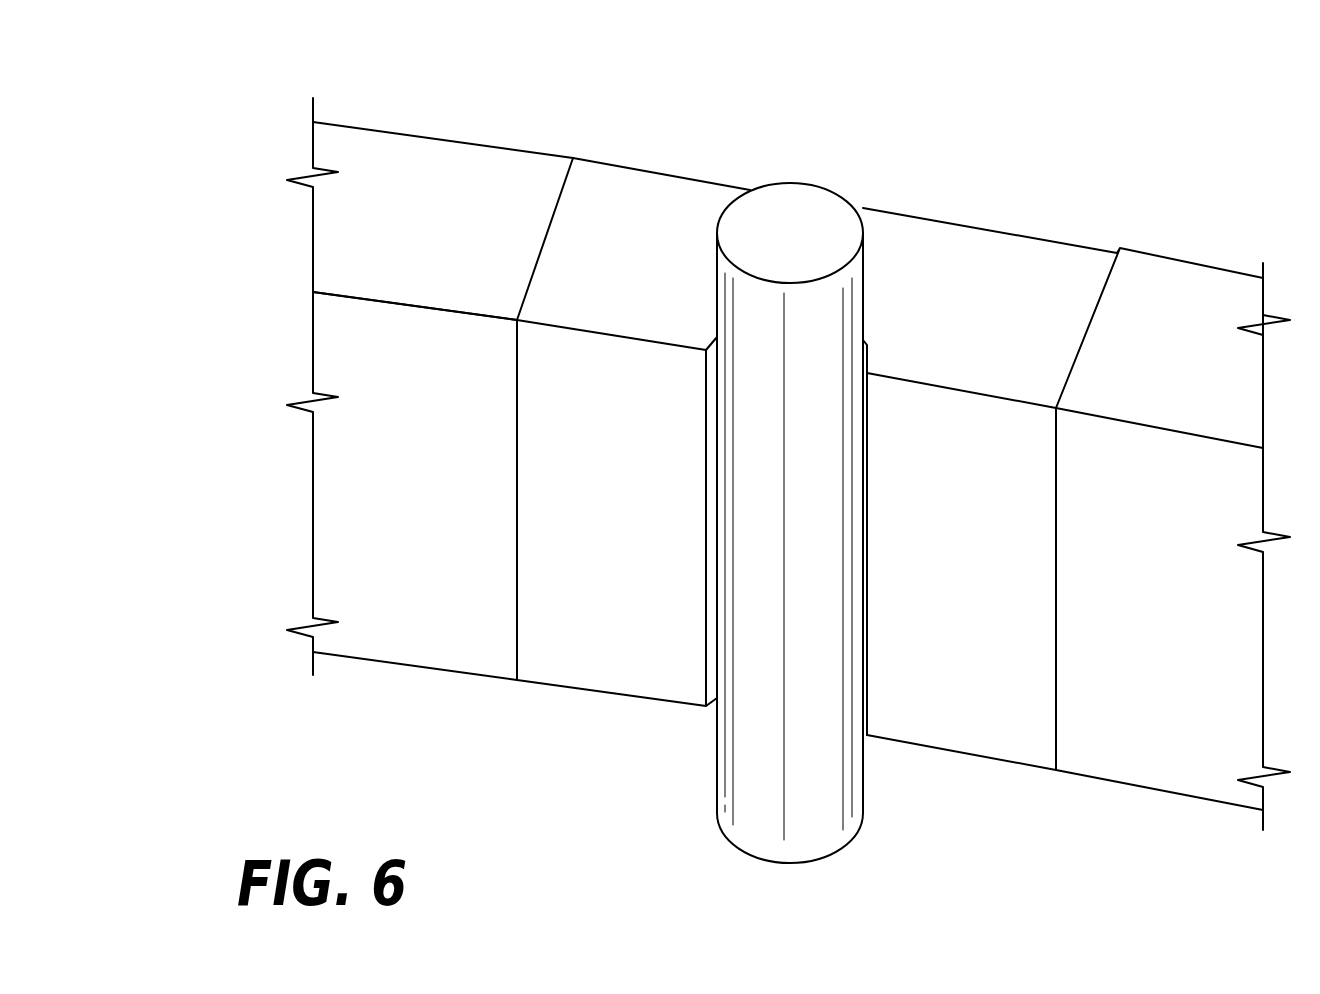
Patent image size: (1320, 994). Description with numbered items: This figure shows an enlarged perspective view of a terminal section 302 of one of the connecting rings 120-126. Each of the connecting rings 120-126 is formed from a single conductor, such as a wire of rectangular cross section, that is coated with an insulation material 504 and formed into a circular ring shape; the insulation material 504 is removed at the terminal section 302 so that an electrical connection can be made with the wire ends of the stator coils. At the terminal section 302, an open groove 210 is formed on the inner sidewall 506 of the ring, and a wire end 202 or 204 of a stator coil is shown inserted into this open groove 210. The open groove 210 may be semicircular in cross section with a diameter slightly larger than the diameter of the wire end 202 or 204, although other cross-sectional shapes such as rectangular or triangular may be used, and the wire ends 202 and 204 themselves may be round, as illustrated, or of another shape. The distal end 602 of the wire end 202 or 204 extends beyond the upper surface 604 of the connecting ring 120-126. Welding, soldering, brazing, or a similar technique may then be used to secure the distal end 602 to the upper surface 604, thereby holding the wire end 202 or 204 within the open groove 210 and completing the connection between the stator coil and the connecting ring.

The connecting rings 120-126 is at (246, 84).
The terminal section 302 is at (973, 225).
The upper surface 604 is at (644, 286).
The inner sidewall 506 is at (623, 483).
The insulation material 504 is at (358, 662).
The open groove 210 is at (865, 355).
The wire end 202 is at (730, 494).
The wire end 204 is at (730, 494).
The distal end 602 is at (830, 190).